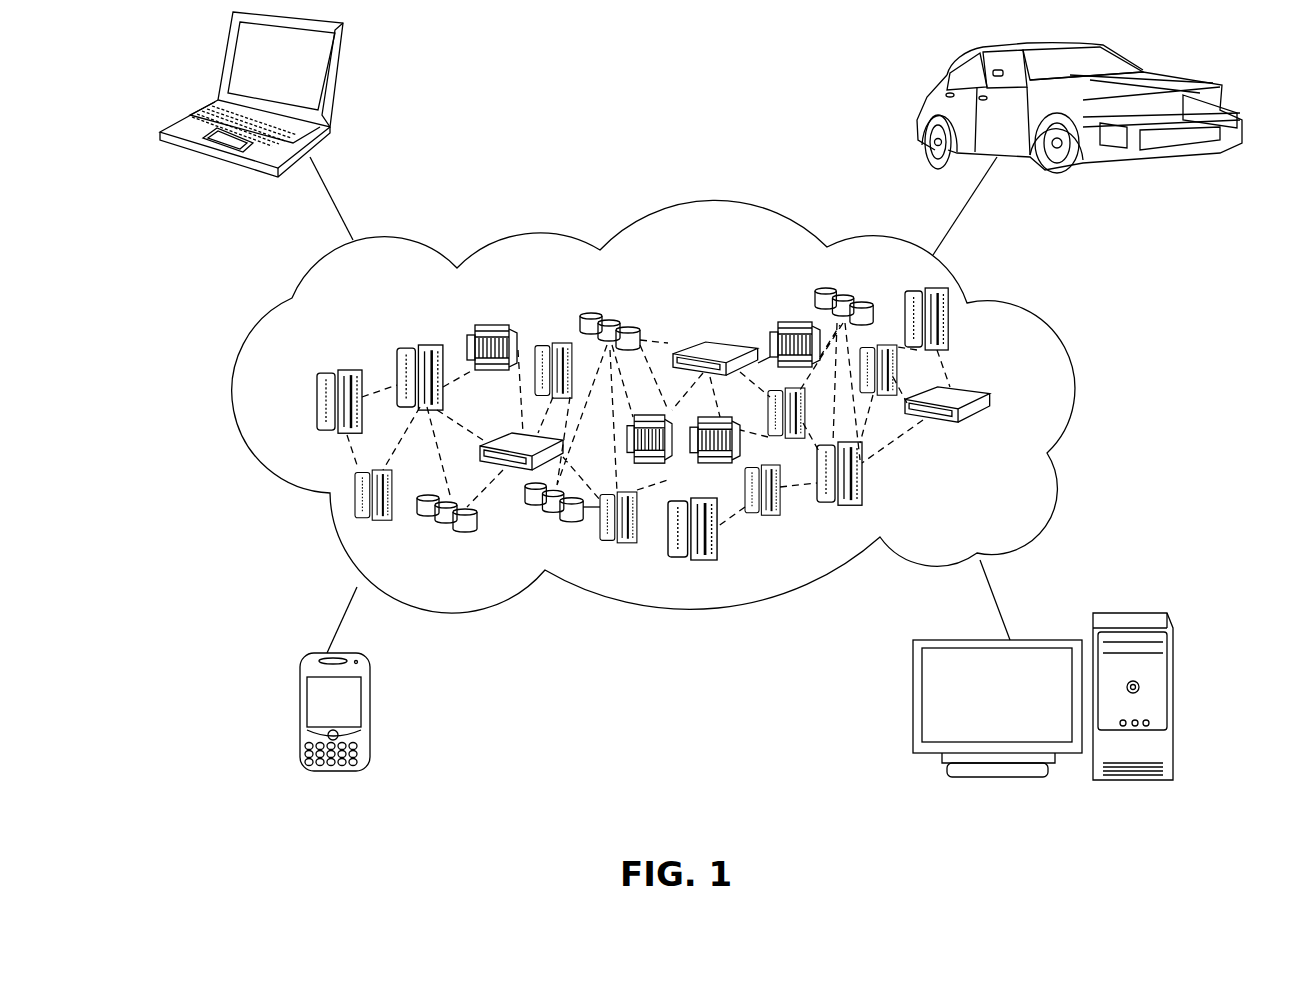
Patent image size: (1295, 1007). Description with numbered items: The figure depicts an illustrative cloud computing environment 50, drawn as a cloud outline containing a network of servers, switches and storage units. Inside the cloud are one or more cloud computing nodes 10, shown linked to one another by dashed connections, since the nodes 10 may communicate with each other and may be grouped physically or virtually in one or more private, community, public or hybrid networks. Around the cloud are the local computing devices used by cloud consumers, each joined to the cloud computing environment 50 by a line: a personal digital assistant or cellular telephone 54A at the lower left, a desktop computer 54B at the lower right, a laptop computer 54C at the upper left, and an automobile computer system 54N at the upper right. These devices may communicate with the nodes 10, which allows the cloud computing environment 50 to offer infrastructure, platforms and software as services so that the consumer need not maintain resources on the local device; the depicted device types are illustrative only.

The cloud computing nodes 10 is at (1028, 402).
The cloud computing environment 50 is at (1055, 317).
The personal digital assistant or cellular telephone 54A is at (300, 717).
The desktop computer 54B is at (1138, 617).
The laptop computer 54C is at (337, 82).
The automobile computer system 54N is at (925, 90).